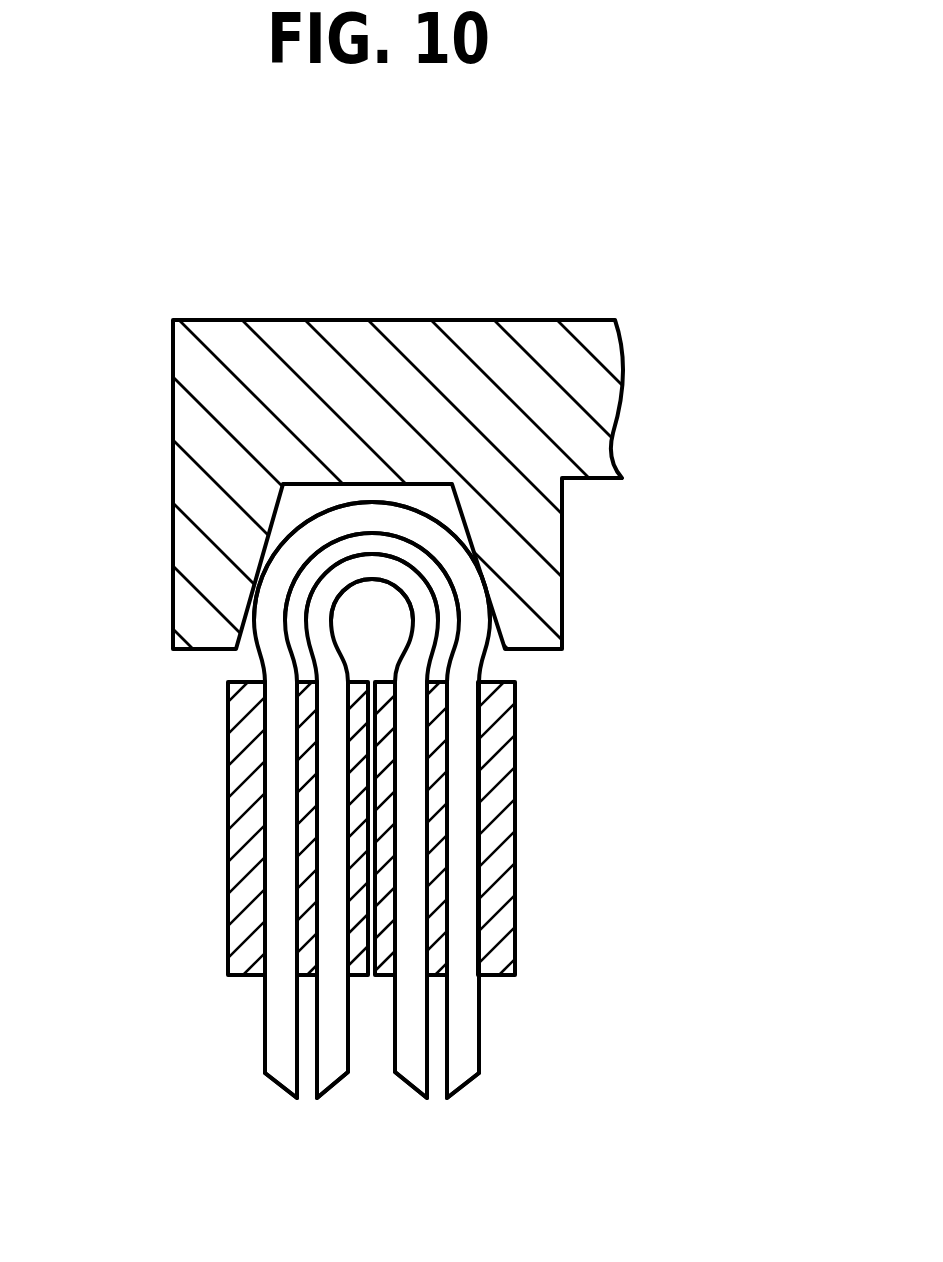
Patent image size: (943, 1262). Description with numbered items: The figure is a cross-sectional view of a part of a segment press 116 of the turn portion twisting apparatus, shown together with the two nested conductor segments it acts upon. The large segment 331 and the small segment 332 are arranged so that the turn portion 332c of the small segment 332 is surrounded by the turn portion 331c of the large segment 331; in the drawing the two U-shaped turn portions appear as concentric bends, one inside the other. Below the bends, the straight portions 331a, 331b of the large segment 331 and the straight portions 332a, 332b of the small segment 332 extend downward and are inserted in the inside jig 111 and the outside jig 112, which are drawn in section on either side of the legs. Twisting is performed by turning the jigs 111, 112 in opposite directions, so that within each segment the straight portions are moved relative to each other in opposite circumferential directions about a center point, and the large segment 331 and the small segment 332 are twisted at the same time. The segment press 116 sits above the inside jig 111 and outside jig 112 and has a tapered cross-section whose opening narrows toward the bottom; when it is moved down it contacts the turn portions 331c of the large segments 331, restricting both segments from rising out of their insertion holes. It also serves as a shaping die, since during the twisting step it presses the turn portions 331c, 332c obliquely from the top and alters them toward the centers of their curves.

The inside jig 111 is at (500, 878).
The outside jig 112 is at (243, 840).
The segment press 116 is at (600, 345).
The large segment 331 is at (268, 1120).
The straight portion 331a is at (465, 722).
The straight portion 331b is at (277, 723).
The turn portion 331c is at (342, 513).
The small segment 332 is at (355, 1110).
The straight portion 332a is at (412, 783).
The straight portion 332b is at (328, 792).
The turn portion 332c is at (388, 570).